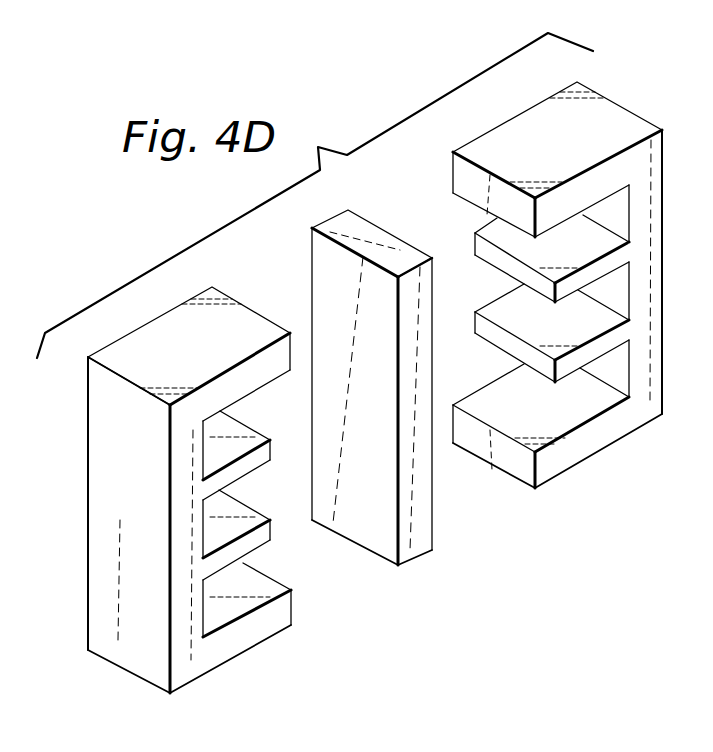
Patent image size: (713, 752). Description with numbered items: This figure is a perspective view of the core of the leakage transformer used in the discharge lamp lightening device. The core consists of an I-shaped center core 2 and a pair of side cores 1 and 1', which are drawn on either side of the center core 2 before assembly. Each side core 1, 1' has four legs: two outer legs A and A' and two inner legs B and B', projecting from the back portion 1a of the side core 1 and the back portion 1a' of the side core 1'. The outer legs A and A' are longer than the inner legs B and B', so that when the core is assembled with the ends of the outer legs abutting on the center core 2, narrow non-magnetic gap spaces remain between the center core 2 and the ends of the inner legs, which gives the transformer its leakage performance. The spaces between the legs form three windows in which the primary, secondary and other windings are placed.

The side core 1 is at (577, 301).
The back yoke portion of core block 1a is at (620, 309).
The side core 1' is at (192, 495).
The back yoke portion of mating core block 1a' is at (145, 538).
The center core 2 is at (418, 545).